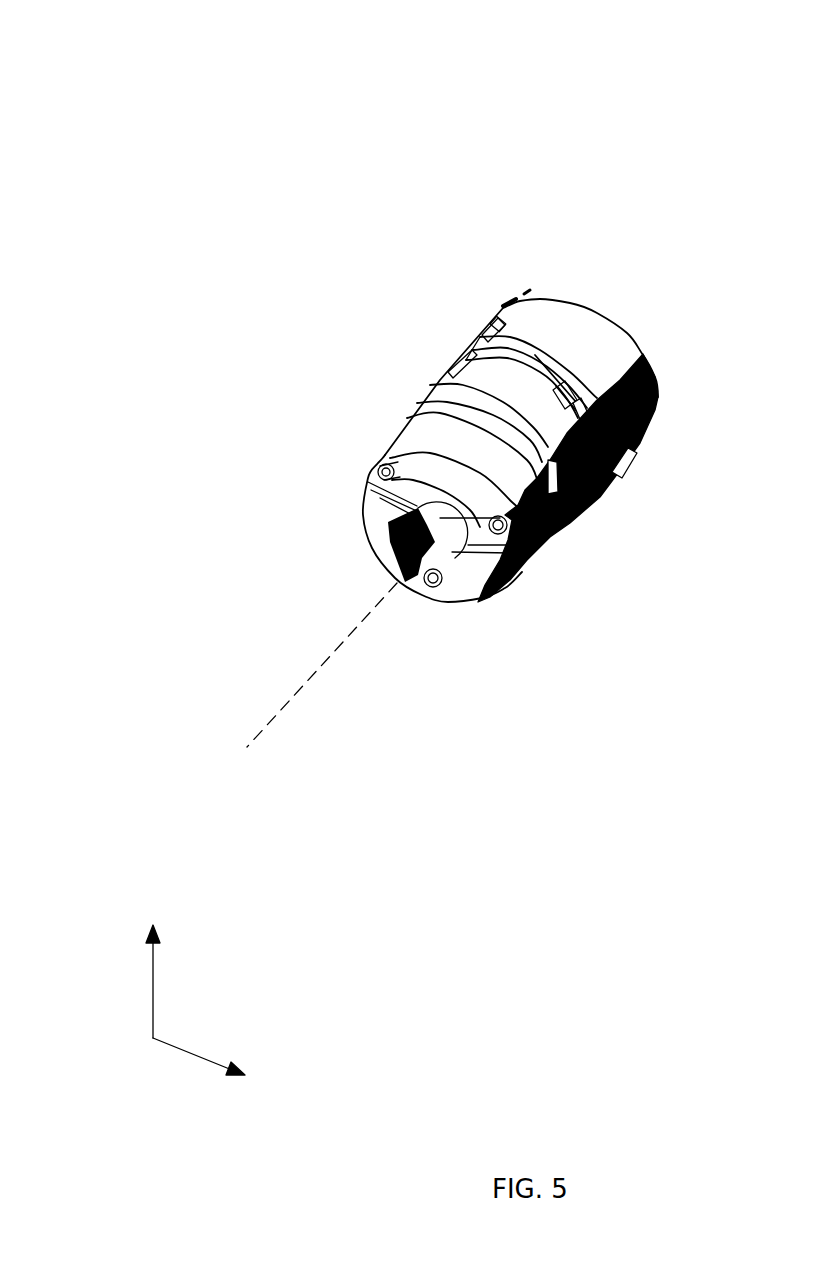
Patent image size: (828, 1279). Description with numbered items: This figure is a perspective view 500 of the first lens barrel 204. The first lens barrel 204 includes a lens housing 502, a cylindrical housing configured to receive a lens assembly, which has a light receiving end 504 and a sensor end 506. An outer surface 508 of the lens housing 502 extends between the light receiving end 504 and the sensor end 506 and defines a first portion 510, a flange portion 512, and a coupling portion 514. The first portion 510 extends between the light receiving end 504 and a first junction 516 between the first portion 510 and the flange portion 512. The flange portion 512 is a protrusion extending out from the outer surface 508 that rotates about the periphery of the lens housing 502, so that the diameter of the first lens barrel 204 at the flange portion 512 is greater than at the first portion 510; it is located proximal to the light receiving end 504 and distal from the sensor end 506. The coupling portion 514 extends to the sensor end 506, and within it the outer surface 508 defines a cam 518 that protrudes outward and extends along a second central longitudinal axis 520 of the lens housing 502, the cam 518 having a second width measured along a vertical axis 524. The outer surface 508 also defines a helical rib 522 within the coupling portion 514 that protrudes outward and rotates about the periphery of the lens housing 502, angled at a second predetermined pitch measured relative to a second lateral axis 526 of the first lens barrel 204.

The perspective view 500 is at (352, 98).
The first lens barrel 204 is at (333, 400).
The lens housing 502 is at (651, 374).
The light receiving end 504 is at (375, 478).
The sensor end 506 is at (548, 299).
The outer surface 508 is at (390, 456).
The first portion 510 is at (417, 437).
The flange portion 512 is at (430, 385).
The coupling portion 514 is at (595, 324).
The first junction 516 is at (415, 404).
The cam 518 is at (470, 345).
The second central longitudinal axis 520 is at (273, 717).
The helical rib 522 is at (593, 500).
The vertical axis 524 is at (153, 997).
The second lateral axis 526 is at (213, 1060).